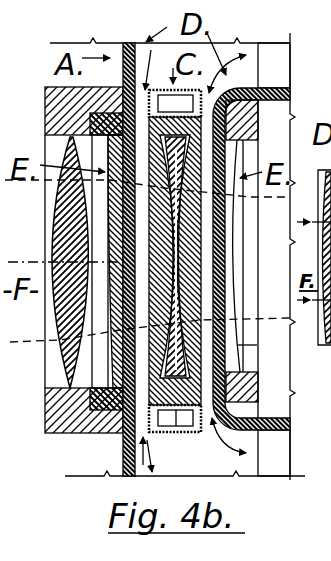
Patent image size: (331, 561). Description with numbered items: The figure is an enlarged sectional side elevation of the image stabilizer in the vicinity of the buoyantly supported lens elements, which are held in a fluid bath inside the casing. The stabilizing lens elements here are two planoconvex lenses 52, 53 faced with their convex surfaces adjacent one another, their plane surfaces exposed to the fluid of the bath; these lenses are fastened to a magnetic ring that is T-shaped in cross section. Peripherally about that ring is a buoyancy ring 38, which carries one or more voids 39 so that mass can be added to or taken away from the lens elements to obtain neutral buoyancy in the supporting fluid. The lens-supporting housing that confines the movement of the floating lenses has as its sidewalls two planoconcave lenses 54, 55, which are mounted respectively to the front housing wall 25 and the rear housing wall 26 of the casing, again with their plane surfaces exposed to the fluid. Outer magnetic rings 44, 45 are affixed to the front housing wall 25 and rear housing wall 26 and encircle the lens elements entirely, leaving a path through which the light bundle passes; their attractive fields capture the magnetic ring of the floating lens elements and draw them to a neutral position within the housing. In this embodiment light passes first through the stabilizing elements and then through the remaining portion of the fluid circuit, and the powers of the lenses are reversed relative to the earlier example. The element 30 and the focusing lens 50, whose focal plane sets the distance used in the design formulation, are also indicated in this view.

The front housing wall 25 is at (124, 70).
The rear housing wall 26 is at (233, 109).
The outer shell 30 is at (297, 237).
The buoyancy ring 38 is at (186, 415).
The void 39 is at (165, 412).
The outer magnetic ring 44 is at (257, 387).
The outer magnetic ring 45 is at (108, 415).
The focusing lens 50 is at (62, 222).
The planoconvex lens 52 is at (170, 243).
The planoconvex lens 53 is at (261, 256).
The planoconcave lens 54 is at (125, 350).
The planoconcave lens 55 is at (238, 347).